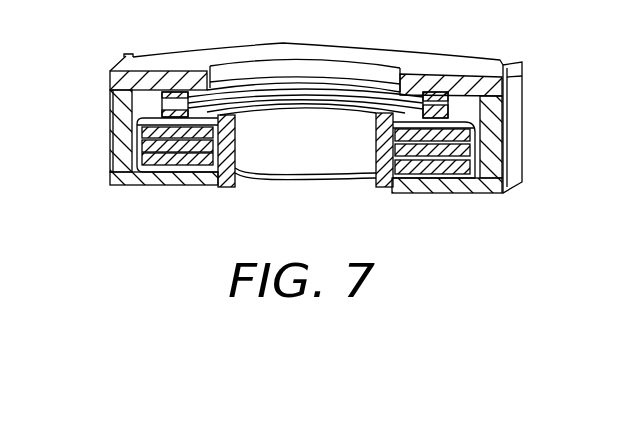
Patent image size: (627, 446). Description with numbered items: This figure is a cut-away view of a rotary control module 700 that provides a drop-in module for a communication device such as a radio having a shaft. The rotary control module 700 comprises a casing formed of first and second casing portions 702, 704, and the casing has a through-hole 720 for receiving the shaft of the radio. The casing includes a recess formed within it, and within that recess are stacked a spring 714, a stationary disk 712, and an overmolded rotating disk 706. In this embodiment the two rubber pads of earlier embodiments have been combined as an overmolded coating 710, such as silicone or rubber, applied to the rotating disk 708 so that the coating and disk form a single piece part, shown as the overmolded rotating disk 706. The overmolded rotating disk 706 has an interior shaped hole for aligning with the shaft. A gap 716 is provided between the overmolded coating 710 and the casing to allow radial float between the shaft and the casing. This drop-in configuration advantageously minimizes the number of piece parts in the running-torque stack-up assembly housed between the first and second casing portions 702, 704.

The rotary control module 700 is at (597, 250).
The first casing portion 702 is at (522, 130).
The second casing portion 704 is at (522, 72).
The overmolded rotating disk 706 is at (150, 142).
The rotating disk 708 is at (227, 157).
The overmolded coating 710 is at (193, 172).
The stationary disk 712 is at (163, 100).
The spring 714 is at (162, 94).
The gap 716 is at (134, 173).
The through-hole 720 is at (363, 70).